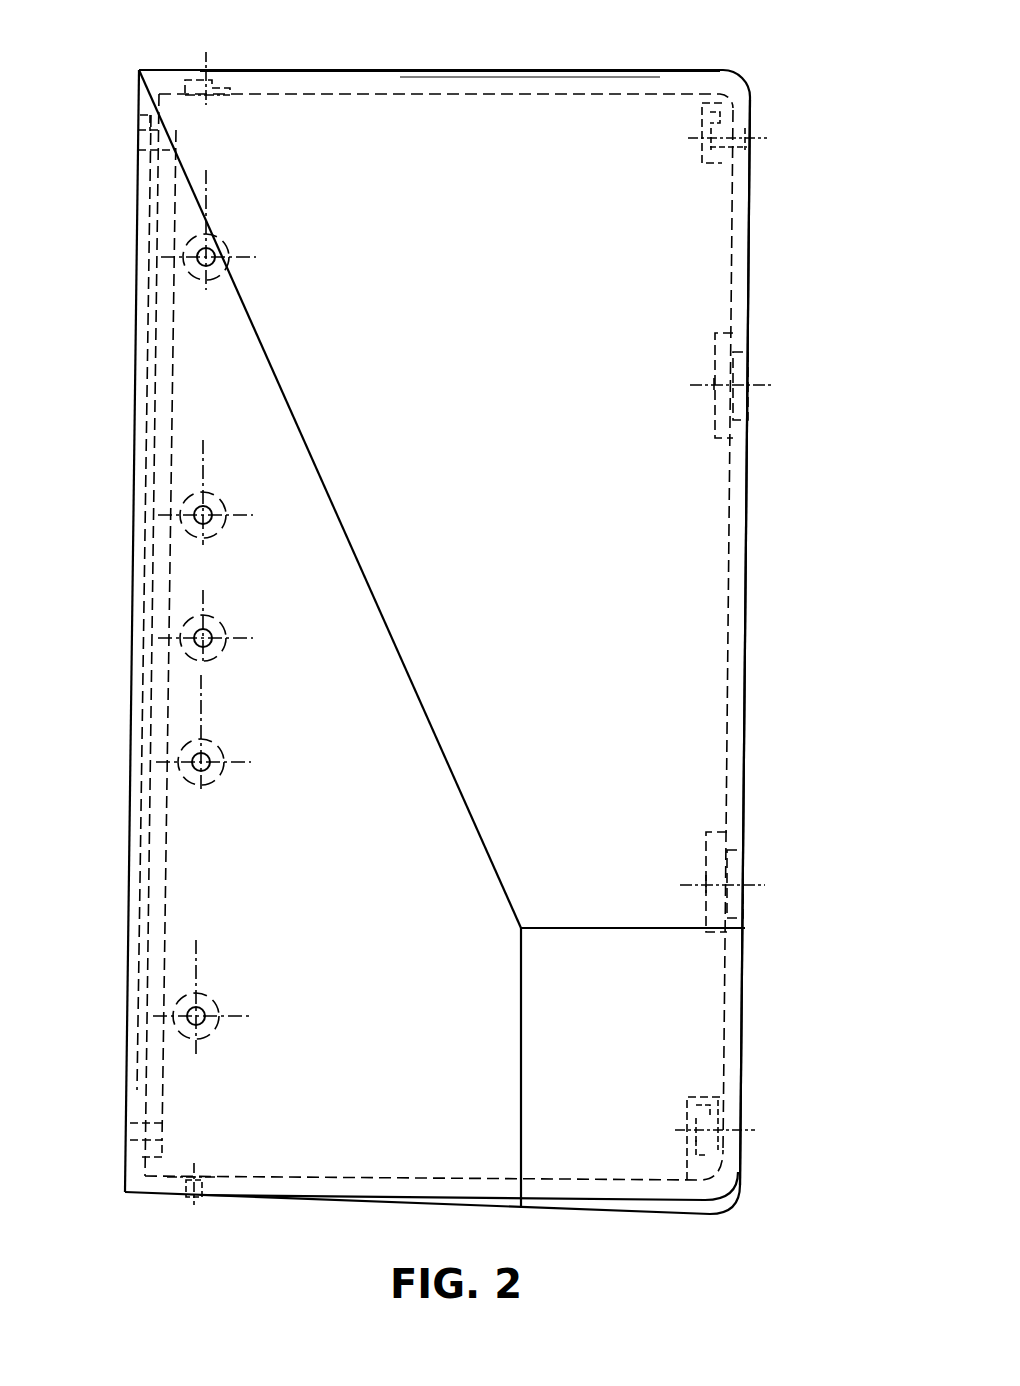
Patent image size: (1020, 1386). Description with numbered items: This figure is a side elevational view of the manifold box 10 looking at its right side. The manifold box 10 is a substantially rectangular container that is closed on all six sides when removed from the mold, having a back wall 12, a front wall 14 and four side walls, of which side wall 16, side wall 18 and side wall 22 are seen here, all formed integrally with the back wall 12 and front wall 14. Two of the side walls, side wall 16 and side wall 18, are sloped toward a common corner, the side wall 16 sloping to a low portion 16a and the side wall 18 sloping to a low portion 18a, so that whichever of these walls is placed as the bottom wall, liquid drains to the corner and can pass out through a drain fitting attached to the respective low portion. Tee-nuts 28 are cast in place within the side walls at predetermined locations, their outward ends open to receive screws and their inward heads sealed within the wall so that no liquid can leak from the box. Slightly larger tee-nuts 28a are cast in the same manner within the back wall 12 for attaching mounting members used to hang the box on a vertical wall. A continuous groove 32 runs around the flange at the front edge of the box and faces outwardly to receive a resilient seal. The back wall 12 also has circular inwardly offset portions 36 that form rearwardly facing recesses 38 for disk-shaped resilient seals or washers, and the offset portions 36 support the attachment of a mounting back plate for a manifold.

The manifold box 10 is at (530, 60).
The back wall 12 is at (750, 255).
The front wall 14 is at (136, 360).
The side wall 16 is at (700, 708).
The low portion 16a is at (698, 1033).
The side wall 18 is at (293, 1205).
The low portion 18a is at (600, 1214).
The side wall 22 is at (318, 70).
The tee-nuts 28 is at (182, 75).
The tee-nuts 28a is at (743, 123).
The groove 32 is at (137, 124).
The inwardly offset portions 36 is at (713, 362).
The recesses 38 is at (743, 370).